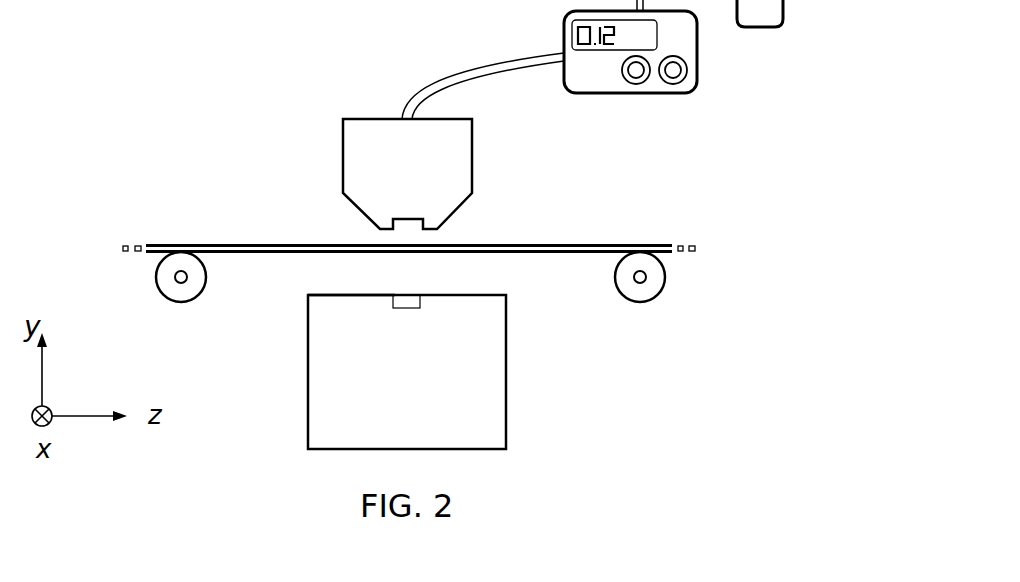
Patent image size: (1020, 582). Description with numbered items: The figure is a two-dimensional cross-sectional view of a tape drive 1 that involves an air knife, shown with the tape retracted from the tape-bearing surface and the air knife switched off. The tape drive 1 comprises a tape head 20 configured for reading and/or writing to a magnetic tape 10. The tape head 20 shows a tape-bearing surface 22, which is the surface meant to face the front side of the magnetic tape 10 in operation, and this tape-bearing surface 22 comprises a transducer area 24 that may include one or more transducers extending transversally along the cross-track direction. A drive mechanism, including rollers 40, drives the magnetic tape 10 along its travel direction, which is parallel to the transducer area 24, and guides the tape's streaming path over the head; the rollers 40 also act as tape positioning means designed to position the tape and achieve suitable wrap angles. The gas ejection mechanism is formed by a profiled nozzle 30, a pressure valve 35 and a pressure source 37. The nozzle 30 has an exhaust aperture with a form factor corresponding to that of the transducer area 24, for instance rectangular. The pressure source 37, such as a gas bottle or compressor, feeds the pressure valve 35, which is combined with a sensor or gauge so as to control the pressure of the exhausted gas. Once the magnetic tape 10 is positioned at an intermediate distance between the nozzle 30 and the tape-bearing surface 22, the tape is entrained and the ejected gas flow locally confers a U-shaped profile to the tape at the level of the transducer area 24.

The tape drive 1 is at (582, 437).
The magnetic tape 10 is at (286, 244).
The tape head 20 is at (507, 384).
The tape-bearing surface 22 is at (351, 293).
The transducer area 24 is at (421, 291).
The nozzle 30 is at (473, 140).
The pressure valve 35 is at (692, 93).
The pressure source 37 is at (765, 28).
The rollers 40 is at (168, 290).